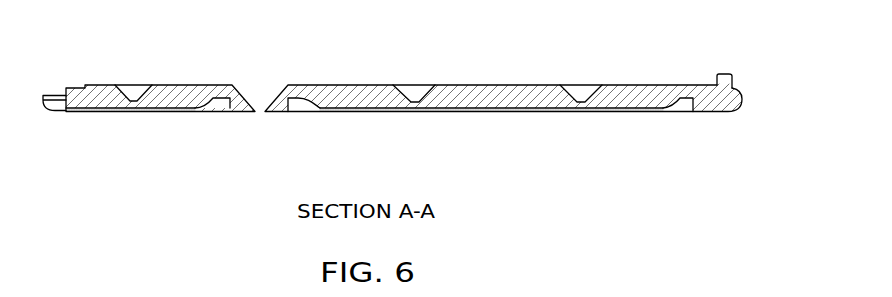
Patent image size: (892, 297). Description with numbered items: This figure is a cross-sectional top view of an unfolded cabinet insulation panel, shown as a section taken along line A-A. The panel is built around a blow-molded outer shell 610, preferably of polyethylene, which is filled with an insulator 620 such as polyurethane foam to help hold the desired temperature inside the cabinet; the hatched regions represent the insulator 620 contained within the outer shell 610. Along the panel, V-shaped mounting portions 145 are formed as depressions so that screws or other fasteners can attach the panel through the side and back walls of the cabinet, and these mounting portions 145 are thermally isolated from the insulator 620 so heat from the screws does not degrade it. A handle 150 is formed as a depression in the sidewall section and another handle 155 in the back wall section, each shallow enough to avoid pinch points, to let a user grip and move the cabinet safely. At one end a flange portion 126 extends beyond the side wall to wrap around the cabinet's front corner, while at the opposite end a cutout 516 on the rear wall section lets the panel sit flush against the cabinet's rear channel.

The flange portion 126 is at (725, 74).
The mounting portions 145 is at (135, 101).
The handle 150 is at (679, 104).
The handle 155 is at (217, 104).
The cutout 516 is at (57, 95).
The outer shell 610 is at (92, 112).
The insulator 620 is at (197, 100).